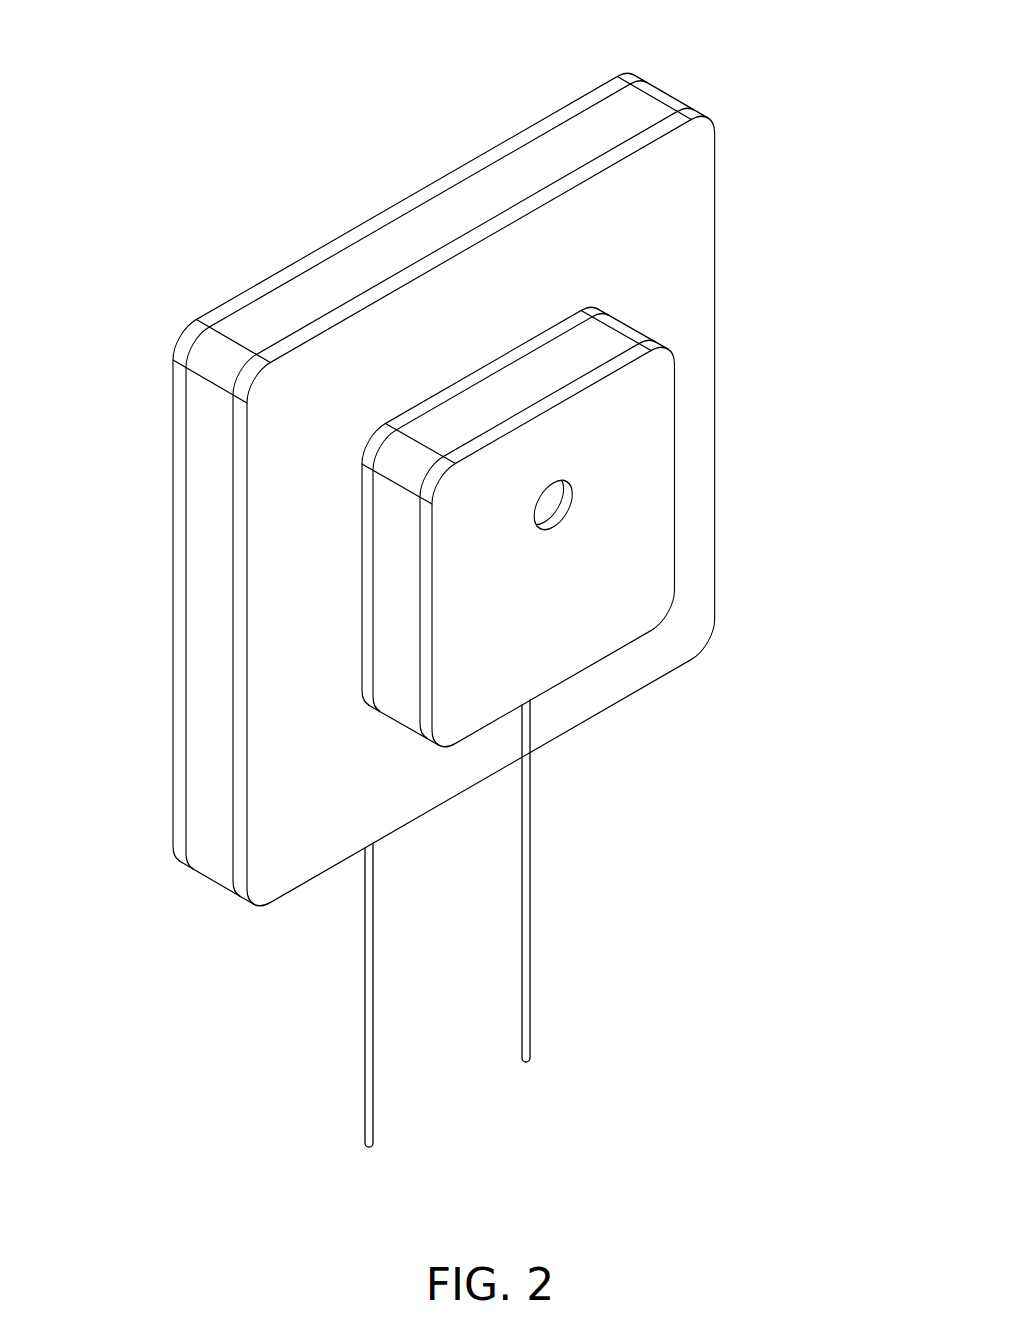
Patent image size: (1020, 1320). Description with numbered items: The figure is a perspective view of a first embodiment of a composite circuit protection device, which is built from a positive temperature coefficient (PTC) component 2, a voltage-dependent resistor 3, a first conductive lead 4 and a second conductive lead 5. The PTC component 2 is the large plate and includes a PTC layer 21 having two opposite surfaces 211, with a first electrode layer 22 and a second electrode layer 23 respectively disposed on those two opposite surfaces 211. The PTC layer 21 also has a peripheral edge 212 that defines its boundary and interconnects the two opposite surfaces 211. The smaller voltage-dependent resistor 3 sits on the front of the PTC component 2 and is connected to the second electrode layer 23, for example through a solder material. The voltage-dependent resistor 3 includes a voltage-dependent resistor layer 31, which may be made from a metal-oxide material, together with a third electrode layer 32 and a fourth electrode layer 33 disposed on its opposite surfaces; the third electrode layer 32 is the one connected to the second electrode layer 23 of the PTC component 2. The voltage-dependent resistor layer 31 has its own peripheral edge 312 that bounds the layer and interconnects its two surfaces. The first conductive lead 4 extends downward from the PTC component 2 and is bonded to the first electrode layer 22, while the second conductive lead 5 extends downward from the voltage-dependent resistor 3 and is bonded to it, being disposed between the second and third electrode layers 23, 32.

The positive temperature coefficient (PTC) component 2 is at (435, 458).
The PTC layer 21 is at (643, 112).
The opposite surfaces of the PTC layer 211 is at (643, 87).
The first electrode layer 22 is at (573, 110).
The second electrode layer 23 is at (630, 147).
The peripheral edge of the PTC layer 212 is at (210, 602).
The voltage-dependent resistor 3 is at (533, 499).
The voltage-dependent resistor layer 31 is at (598, 350).
The third electrode layer 32 is at (565, 330).
The fourth electrode layer 33 is at (620, 368).
The peripheral edge of the voltage-dependent resistor layer 312 is at (393, 557).
The first conductive lead 4 is at (368, 1095).
The second conductive lead 5 is at (525, 1010).